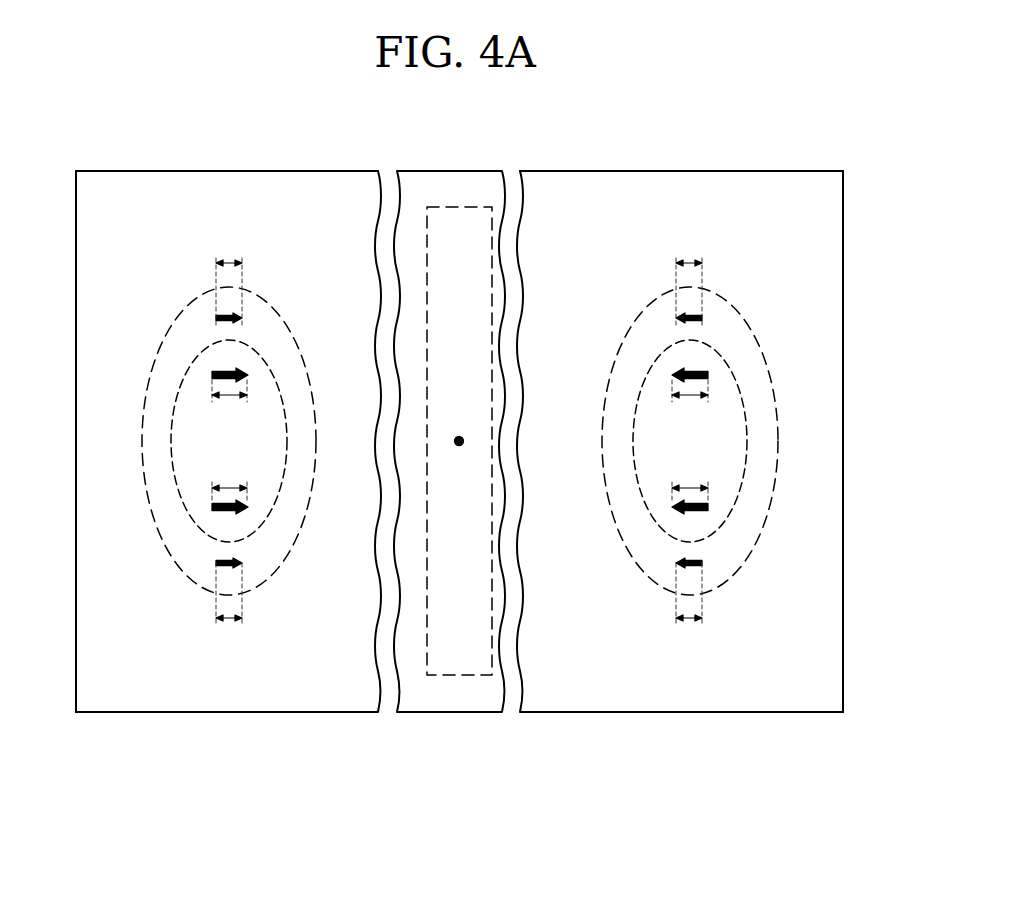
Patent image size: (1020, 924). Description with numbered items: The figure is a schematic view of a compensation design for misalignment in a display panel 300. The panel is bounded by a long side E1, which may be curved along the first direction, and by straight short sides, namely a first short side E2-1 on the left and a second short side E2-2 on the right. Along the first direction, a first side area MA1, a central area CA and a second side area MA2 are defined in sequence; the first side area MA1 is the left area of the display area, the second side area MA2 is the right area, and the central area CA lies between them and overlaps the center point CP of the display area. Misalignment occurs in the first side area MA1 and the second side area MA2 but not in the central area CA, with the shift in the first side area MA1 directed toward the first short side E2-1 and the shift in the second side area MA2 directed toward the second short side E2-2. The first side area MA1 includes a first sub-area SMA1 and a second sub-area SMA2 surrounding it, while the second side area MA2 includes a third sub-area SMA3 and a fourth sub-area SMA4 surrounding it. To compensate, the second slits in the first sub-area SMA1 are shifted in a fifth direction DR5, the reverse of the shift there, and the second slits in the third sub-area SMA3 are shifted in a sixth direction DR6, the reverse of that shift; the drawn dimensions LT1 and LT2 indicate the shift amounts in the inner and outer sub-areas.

The display panel 300 is at (770, 118).
The long side E1 is at (225, 170).
The first short side E2-1 is at (77, 191).
The second short side E2-2 is at (843, 193).
The central area CA is at (450, 206).
The center point CP is at (461, 454).
The fifth direction DR5 is at (222, 370).
The sixth direction DR6 is at (695, 368).
The first length LT1 is at (460, 441).
The second length LT2 is at (459, 441).
The first sub-area SMA1 is at (258, 528).
The second sub-area SMA2 is at (297, 542).
The third sub-area SMA3 is at (718, 527).
The fourth sub-area SMA4 is at (755, 542).
The first side area MA1 is at (350, 760).
The second side area MA2 is at (698, 758).